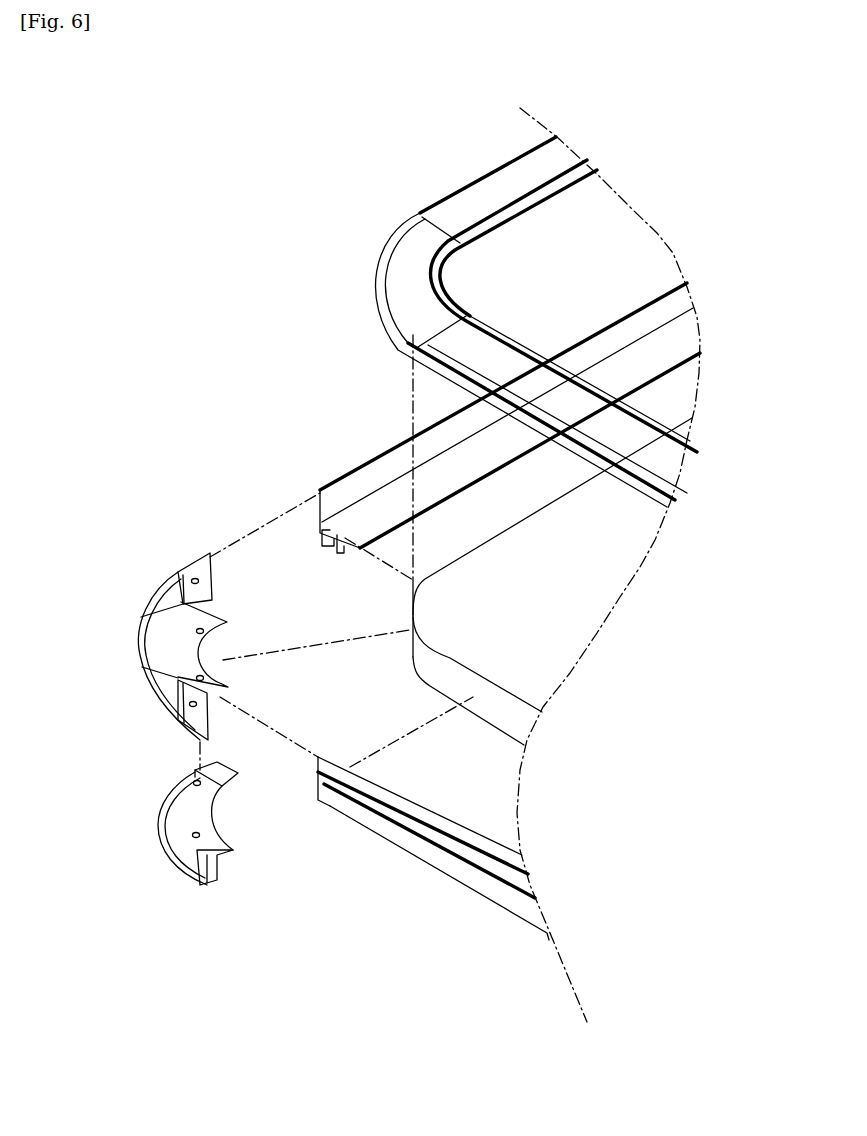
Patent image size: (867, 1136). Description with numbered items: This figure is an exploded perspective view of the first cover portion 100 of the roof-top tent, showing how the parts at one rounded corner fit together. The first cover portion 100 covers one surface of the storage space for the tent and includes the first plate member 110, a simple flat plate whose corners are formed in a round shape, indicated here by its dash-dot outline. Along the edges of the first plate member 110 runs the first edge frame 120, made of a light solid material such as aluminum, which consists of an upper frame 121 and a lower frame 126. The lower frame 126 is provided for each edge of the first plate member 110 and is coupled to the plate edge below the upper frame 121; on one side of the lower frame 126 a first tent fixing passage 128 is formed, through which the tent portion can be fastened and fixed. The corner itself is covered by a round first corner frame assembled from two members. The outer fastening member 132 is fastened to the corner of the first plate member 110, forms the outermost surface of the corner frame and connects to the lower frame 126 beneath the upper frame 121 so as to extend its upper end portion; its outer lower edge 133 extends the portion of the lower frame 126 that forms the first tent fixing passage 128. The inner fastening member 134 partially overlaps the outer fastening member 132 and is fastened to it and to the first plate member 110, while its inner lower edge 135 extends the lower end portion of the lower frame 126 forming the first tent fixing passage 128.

The first cover portion 100 is at (381, 150).
The first plate member 110 is at (612, 557).
The first edge frame 120 is at (476, 322).
The upper frame 121 is at (564, 306).
The lower frame 126 is at (322, 493).
The first tent fixing passage 128 is at (322, 543).
The outer fastening member 132 is at (150, 656).
The outer lower edge 133 is at (198, 744).
The inner fastening member 134 is at (163, 831).
The inner lower edge 135 is at (200, 882).